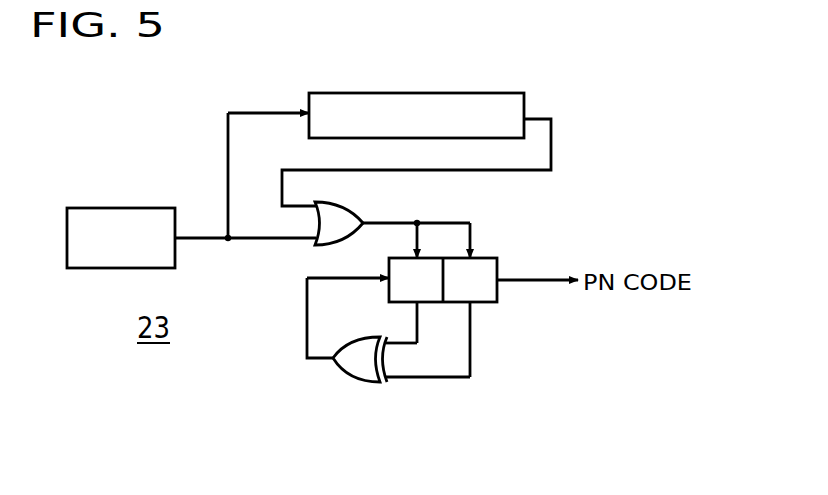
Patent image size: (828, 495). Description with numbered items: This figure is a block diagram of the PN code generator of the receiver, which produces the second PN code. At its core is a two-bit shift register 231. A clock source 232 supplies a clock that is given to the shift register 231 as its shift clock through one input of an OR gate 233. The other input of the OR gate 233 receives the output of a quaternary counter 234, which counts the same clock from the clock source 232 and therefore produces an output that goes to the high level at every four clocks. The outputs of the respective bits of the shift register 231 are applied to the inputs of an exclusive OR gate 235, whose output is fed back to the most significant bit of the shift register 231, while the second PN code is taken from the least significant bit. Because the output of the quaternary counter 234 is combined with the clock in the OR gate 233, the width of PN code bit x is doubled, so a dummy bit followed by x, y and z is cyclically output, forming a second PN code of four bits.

The 2-bit shift register 231 is at (514, 259).
The clock source 232 is at (160, 208).
The OR gate 233 is at (345, 212).
The 4-nary counter 234 is at (521, 104).
The exclusive OR gate 235 is at (355, 366).